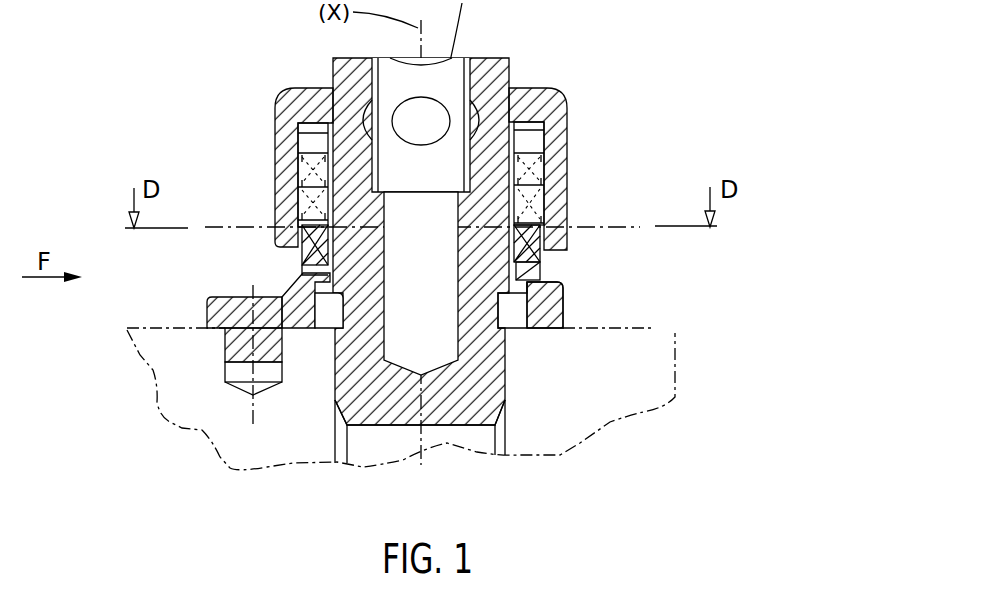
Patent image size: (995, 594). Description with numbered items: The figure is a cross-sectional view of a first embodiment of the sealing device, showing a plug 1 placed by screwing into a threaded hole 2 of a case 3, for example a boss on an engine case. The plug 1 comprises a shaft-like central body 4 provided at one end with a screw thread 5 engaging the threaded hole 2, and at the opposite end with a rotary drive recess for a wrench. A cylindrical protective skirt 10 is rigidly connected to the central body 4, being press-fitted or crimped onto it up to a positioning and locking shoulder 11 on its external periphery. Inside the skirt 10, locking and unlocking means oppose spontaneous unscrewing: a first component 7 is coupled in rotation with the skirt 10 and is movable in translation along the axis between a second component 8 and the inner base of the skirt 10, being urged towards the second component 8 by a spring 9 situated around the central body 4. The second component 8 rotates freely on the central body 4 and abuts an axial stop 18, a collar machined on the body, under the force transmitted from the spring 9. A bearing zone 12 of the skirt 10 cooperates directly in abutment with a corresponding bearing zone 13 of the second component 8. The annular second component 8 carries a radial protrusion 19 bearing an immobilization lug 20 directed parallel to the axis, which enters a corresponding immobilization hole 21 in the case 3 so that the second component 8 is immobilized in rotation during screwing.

The plug 1 is at (600, 88).
The threaded hole 2 is at (447, 440).
The case 3 is at (652, 368).
The central body 4 is at (494, 76).
The screw thread 5 is at (344, 412).
The first component 7 is at (538, 238).
The second component 8 is at (563, 306).
The spring 9 is at (538, 178).
The cylindrical protective skirt 10 is at (542, 107).
The positioning and locking shoulder 11 is at (326, 117).
The bearing zone 12 is at (295, 248).
The bearing zone 13 is at (292, 285).
The axial stop 18 is at (538, 279).
The protrusion 19 is at (195, 313).
The immobilization lug 20 is at (225, 343).
The immobilization hole 21 is at (225, 375).